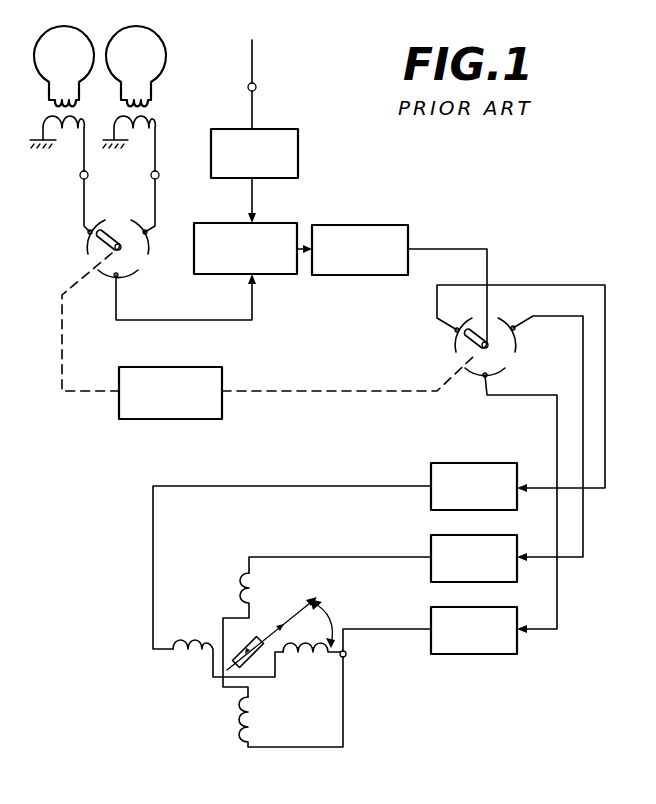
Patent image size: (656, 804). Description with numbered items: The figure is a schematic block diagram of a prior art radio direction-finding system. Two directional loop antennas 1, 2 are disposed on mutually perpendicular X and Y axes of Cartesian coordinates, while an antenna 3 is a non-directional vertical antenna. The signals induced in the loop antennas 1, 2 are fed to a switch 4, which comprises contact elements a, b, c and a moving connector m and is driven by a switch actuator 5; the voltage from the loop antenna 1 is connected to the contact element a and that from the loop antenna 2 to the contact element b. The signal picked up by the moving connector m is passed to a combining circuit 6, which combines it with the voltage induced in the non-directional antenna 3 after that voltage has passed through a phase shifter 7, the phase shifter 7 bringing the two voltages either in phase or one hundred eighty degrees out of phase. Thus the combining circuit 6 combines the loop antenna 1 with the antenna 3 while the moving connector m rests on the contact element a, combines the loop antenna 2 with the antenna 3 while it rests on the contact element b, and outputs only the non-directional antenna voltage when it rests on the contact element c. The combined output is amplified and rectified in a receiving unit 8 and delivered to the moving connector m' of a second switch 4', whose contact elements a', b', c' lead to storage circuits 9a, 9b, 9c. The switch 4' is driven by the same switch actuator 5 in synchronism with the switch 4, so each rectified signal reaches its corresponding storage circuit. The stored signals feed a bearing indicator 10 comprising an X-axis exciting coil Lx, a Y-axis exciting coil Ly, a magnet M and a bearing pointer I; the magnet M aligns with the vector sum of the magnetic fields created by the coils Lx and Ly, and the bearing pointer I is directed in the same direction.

The loop antenna 1 is at (60, 36).
The loop antenna 2 is at (132, 45).
The non-directional vertical antenna 3 is at (256, 60).
The switch 4 is at (117, 254).
The switch actuator 5 is at (178, 367).
The combining circuit 6 is at (284, 210).
The phase shifter 7 is at (299, 143).
The receiving unit 8 is at (372, 225).
The switch 4' is at (477, 350).
The storage circuit 9a is at (512, 440).
The storage circuit 9b is at (431, 545).
The storage circuit 9c is at (490, 654).
The bearing indicator 10 is at (247, 660).
The contact element a is at (76, 243).
The contact element b is at (160, 239).
The contact element c is at (134, 296).
The moving connector m is at (113, 223).
The contact element a' is at (432, 350).
The contact element b' is at (512, 306).
The contact element c' is at (463, 395).
The moving connector m' is at (454, 356).
The X-axis exciting coil Lx is at (194, 649).
The Y-axis exciting coil Ly is at (240, 585).
The magnet M is at (250, 645).
The bearing pointer I is at (282, 620).